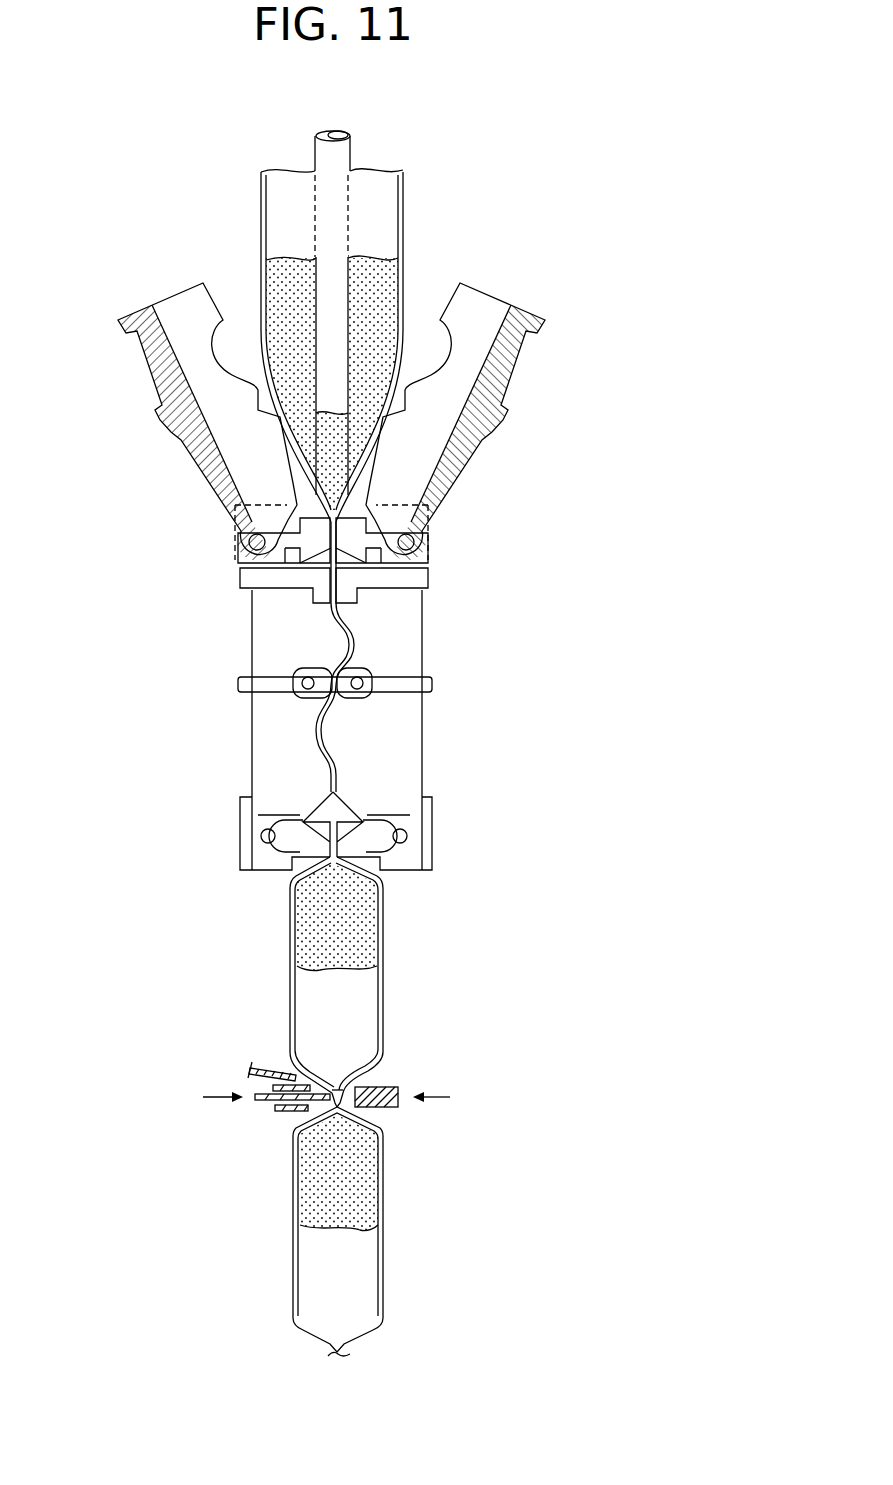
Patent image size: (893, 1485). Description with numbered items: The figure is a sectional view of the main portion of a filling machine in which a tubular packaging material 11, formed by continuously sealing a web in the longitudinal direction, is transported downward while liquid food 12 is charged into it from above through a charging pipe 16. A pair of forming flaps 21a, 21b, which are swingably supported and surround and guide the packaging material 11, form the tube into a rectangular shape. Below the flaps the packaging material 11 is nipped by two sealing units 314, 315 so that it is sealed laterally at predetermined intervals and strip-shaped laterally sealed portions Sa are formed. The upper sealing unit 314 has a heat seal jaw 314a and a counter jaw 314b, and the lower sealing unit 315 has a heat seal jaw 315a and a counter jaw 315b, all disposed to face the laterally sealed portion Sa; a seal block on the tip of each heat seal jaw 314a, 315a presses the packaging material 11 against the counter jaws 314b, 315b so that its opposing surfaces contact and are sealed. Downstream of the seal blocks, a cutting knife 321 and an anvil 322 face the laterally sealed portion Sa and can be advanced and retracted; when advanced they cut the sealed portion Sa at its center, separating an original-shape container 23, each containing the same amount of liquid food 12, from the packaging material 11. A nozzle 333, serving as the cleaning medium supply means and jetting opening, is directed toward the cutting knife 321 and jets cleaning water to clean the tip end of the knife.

The tubular packaging material 11 is at (280, 201).
The charging pipe 16 is at (325, 300).
The forming flap 21a is at (153, 350).
The forming flap 21b is at (515, 357).
The sealing unit 314 is at (276, 517).
The heat seal jaw 314a is at (362, 543).
The counter jaw 314b is at (307, 543).
The sealing unit 315 is at (304, 769).
The heat seal jaw 315a is at (377, 840).
The counter jaw 315b is at (305, 842).
The liquid food 12 is at (313, 922).
The original-shape container 23 is at (289, 1106).
The nozzle 333 is at (277, 1067).
The anvil 322 is at (380, 1088).
The cutting knife 321 is at (260, 1110).
The laterally sealed portion Sa is at (345, 847).